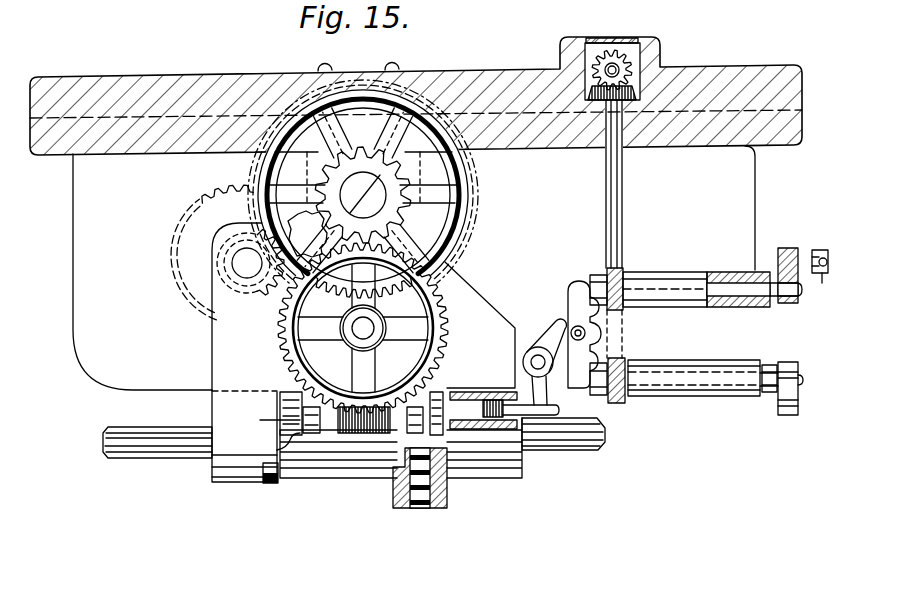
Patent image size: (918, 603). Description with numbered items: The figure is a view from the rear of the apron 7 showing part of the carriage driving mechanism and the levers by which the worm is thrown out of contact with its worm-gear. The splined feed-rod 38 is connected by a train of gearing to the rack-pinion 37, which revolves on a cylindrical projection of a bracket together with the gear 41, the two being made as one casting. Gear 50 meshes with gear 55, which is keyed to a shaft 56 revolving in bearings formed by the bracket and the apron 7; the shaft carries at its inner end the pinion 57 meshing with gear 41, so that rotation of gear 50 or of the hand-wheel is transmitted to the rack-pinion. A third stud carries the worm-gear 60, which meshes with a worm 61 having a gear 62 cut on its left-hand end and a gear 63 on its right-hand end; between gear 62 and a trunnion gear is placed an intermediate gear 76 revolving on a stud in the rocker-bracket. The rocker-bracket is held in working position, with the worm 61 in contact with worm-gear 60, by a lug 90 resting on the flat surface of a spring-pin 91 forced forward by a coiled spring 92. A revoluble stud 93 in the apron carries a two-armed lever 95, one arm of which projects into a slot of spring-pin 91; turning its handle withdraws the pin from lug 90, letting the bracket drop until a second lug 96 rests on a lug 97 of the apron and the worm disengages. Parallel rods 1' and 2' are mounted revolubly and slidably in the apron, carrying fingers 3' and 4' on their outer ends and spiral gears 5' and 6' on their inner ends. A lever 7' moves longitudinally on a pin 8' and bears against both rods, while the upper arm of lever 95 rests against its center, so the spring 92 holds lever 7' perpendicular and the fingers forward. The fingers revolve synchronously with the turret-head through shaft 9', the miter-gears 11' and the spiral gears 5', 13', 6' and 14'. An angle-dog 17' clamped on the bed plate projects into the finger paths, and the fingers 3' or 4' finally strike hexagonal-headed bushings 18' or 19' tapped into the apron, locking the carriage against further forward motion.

The apron 7 is at (405, 314).
The gear 41 is at (450, 261).
The pinion-gear 37 is at (405, 176).
The gear 50 is at (420, 231).
The gear 55 is at (190, 302).
The shaft 56 is at (232, 263).
The pinion 57 is at (252, 284).
The worm-gear 60 is at (450, 342).
The worm 61 is at (345, 397).
The gear 62 is at (430, 388).
The lug 90 is at (452, 392).
The spring-pin 91 is at (476, 395).
The gear 63 is at (307, 422).
The lug 96 is at (272, 450).
The lug 97 is at (268, 486).
The intermediate gear 76 is at (420, 512).
The coiled spring 92 is at (473, 447).
The revoluble stud 93 is at (538, 358).
The two-armed lever 95 is at (560, 328).
The feed-rod 38 is at (162, 448).
The lever 7' is at (574, 331).
The pin 8' is at (569, 359).
The shaft 9' is at (628, 229).
The miter-gears 11' is at (416, 167).
The spiral gear 5' is at (603, 275).
The spiral gear 13' is at (576, 277).
The rod 1' is at (682, 271).
The hexagonal-headed bushing 18' is at (747, 262).
The finger 3' is at (789, 260).
The angle-dog 17' is at (824, 278).
The hexagonal-headed bushing 19' is at (783, 353).
The spiral gear 14' is at (694, 364).
The spiral gear 6' is at (622, 365).
The rod 2' is at (759, 403).
The finger 4' is at (790, 404).